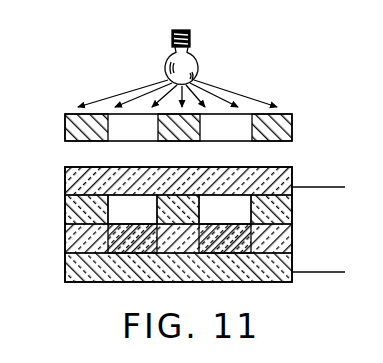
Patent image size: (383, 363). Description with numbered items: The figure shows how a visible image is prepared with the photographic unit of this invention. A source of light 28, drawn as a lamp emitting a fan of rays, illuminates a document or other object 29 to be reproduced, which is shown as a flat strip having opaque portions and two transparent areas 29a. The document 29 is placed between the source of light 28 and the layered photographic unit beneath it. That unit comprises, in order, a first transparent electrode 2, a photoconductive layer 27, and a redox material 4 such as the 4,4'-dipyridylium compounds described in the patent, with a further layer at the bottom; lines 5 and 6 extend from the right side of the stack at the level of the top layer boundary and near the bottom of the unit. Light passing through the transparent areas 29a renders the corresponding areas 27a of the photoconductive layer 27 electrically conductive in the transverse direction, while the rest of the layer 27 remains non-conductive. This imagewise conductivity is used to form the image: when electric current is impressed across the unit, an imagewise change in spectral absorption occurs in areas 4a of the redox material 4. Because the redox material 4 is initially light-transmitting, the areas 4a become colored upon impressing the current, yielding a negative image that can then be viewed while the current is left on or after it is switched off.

The first transparent electrode 2 is at (75, 184).
The redox material 4 is at (75, 239).
The areas of redox material 4a is at (116, 240).
The substrate layer / interface line 5 is at (76, 269).
The lower interface line 6 is at (304, 272).
The photoconductive layer 27 is at (75, 212).
The areas of photoconductive layer 27a is at (131, 208).
The source of light 28 is at (188, 58).
The document or other object to be reproduced 29 is at (292, 128).
The transparent areas 29a is at (218, 132).